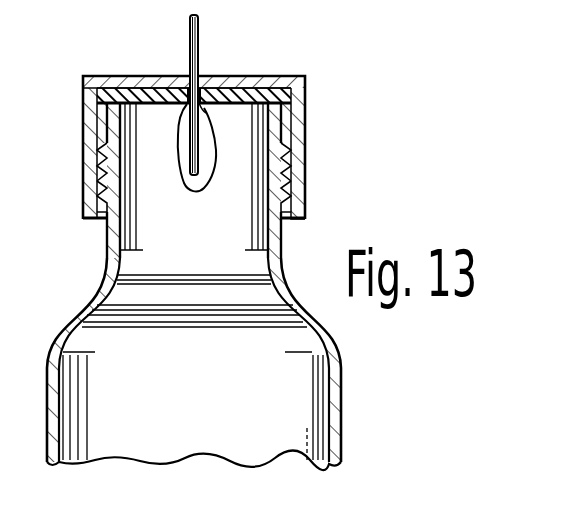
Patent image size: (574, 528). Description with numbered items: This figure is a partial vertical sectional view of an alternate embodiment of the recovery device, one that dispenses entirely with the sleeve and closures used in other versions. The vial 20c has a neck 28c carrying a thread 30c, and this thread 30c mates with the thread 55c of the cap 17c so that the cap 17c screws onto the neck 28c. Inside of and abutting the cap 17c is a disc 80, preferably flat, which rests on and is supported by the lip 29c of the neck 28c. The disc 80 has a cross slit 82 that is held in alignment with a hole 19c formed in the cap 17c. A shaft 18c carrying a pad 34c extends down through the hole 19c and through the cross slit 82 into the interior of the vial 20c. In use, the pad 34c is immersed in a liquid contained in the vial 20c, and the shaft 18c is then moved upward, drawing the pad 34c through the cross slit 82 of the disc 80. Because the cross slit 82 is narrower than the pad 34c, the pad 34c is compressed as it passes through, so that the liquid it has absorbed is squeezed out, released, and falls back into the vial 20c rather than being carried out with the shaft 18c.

The cap 17c is at (305, 112).
The disc 80 is at (137, 88).
The shaft 18c is at (197, 33).
The hole 19c is at (200, 80).
The cross slit 82 is at (200, 110).
The pad 34c is at (188, 186).
The lip 29c is at (115, 98).
The thread 55c is at (99, 150).
The thread 30c is at (100, 175).
The neck 28c is at (108, 240).
The vial 20c is at (373, 373).